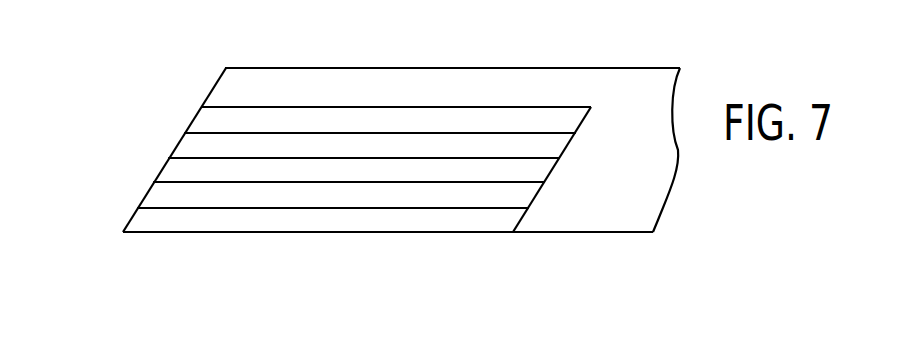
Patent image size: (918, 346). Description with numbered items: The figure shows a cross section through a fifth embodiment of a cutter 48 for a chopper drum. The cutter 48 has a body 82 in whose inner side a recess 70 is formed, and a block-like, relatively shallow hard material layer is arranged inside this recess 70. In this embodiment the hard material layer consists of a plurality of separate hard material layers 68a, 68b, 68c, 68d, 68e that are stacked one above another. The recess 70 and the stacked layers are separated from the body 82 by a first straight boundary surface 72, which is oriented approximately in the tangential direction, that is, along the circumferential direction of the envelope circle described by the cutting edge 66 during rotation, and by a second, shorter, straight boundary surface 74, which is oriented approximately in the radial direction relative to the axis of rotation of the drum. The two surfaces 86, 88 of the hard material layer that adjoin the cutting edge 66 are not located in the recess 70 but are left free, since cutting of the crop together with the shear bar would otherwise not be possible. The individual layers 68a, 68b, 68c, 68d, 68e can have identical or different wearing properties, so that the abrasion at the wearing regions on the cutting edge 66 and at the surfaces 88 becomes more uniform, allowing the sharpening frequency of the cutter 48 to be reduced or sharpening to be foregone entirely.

The cutter 48 is at (190, 61).
The cutting edge 66 is at (123, 232).
The hard material layer 68a is at (213, 225).
The hard material layer 68b is at (263, 200).
The hard material layer 68c is at (315, 172).
The hard material layer 68d is at (370, 148).
The hard material layer 68e is at (423, 122).
The recess 70 is at (482, 245).
The first straight boundary surface 72 is at (548, 106).
The second straight boundary surface 74 is at (550, 173).
The body 82 is at (459, 82).
The surface adjoining the cutting edge 86 is at (495, 235).
The surface adjoining the cutting edge 88 is at (154, 182).